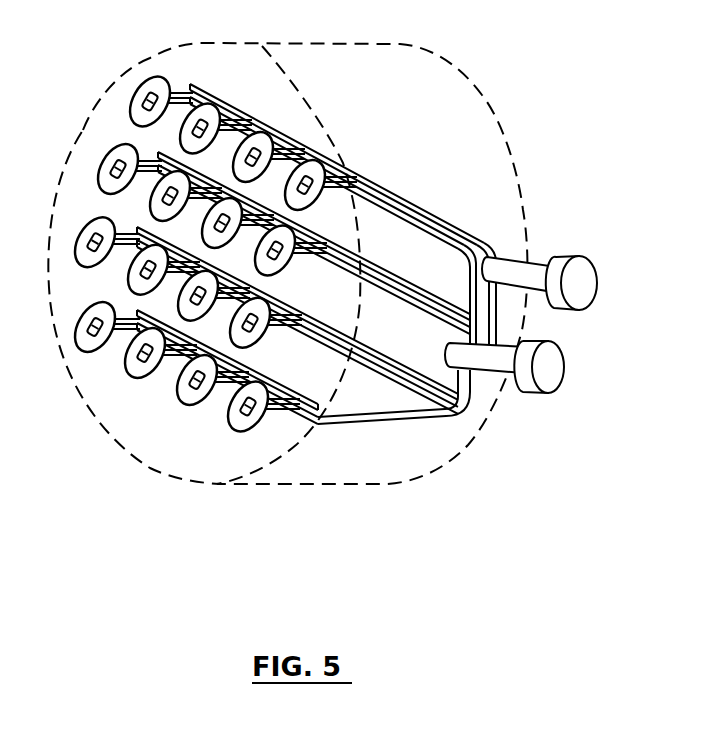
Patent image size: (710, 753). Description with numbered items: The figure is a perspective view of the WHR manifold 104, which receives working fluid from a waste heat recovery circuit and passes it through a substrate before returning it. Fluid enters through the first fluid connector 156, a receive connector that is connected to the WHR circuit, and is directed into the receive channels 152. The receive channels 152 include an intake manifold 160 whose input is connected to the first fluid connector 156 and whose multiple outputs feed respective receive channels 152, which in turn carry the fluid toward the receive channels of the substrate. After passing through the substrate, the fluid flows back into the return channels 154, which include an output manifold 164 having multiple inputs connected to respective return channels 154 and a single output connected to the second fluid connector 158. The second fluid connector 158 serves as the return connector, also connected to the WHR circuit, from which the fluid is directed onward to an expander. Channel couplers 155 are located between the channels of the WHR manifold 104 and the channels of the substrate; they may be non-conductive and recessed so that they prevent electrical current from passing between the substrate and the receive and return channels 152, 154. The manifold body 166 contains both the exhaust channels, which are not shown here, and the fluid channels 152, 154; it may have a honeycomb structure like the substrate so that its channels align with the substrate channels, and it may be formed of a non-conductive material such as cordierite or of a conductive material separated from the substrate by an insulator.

The WHR manifold 104 is at (460, 73).
The receive channels 152 is at (353, 172).
The return channels 154 is at (360, 200).
The channel couplers 155 is at (104, 160).
The first fluid connector 156 is at (597, 262).
The second fluid connector 158 is at (570, 362).
The intake manifold 160 is at (447, 217).
The output manifold 164 is at (348, 424).
The manifold body 166 is at (223, 460).